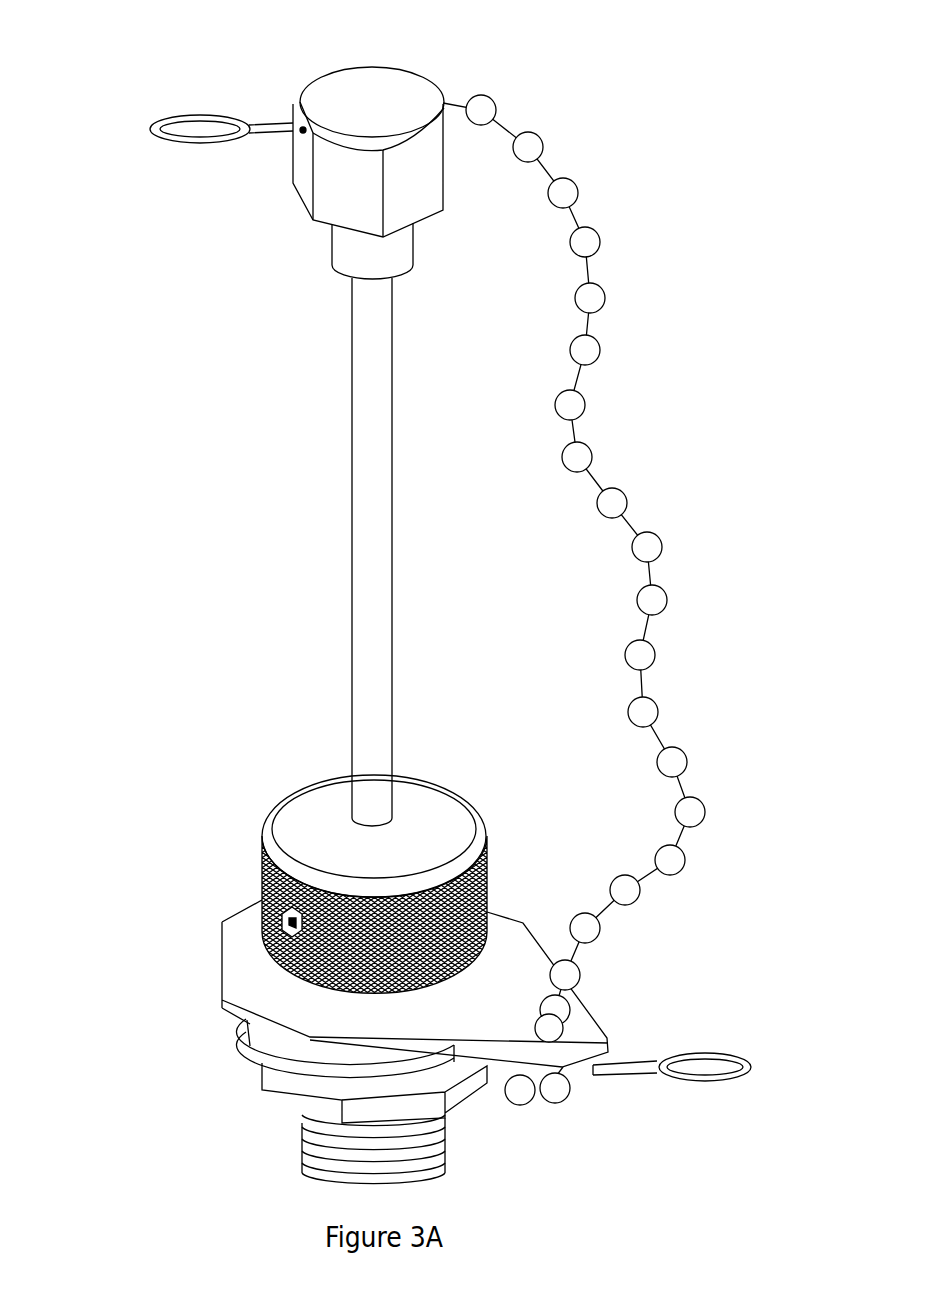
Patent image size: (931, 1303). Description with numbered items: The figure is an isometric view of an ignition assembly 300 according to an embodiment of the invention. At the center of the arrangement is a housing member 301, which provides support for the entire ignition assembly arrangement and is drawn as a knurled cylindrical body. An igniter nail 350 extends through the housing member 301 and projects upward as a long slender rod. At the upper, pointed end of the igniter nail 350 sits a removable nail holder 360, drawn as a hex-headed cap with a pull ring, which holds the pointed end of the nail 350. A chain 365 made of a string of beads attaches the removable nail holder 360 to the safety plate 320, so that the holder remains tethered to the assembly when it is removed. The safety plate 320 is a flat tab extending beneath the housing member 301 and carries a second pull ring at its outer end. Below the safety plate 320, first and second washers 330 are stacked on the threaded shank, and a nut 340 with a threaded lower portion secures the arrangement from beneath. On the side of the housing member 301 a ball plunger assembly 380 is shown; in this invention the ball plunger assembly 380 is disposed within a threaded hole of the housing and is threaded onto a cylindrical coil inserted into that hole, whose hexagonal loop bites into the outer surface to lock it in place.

The ignition assembly 300 is at (88, 288).
The housing member 301 is at (440, 830).
The safety plate 320 is at (578, 1035).
The first and second washers 330 is at (273, 1062).
The nut 340 is at (300, 1098).
The igniter nail 350 is at (375, 417).
The removable nail holder 360 is at (393, 82).
The chain 365 is at (600, 243).
The ball plunger assembly 380 is at (260, 941).